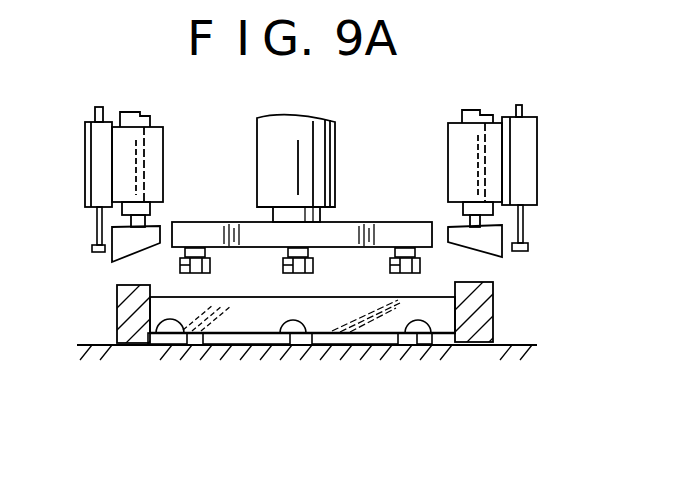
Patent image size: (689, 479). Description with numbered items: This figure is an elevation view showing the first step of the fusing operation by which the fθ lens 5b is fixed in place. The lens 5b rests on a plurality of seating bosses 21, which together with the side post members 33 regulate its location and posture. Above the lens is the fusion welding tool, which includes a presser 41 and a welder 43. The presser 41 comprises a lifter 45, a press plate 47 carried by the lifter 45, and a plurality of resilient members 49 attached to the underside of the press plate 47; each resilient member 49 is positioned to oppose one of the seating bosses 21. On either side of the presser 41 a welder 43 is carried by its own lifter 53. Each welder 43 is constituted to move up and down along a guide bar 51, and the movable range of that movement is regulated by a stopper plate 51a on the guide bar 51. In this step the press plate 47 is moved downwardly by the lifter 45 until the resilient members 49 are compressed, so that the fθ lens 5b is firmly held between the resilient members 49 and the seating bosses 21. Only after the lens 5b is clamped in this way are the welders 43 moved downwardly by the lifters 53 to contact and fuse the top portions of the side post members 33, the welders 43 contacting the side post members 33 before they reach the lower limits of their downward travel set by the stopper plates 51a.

The presser 41 is at (298, 151).
The lifter 45 is at (257, 145).
The press plate 47 is at (220, 222).
The resilient members 49 is at (210, 265).
The lifter 53 is at (122, 145).
The guide bars 51 is at (97, 218).
The stopper plates 51a is at (95, 253).
The welder 43 is at (120, 237).
The side post members 33 is at (117, 316).
The fθ lens 5b is at (322, 320).
The seating bosses 21 is at (155, 345).